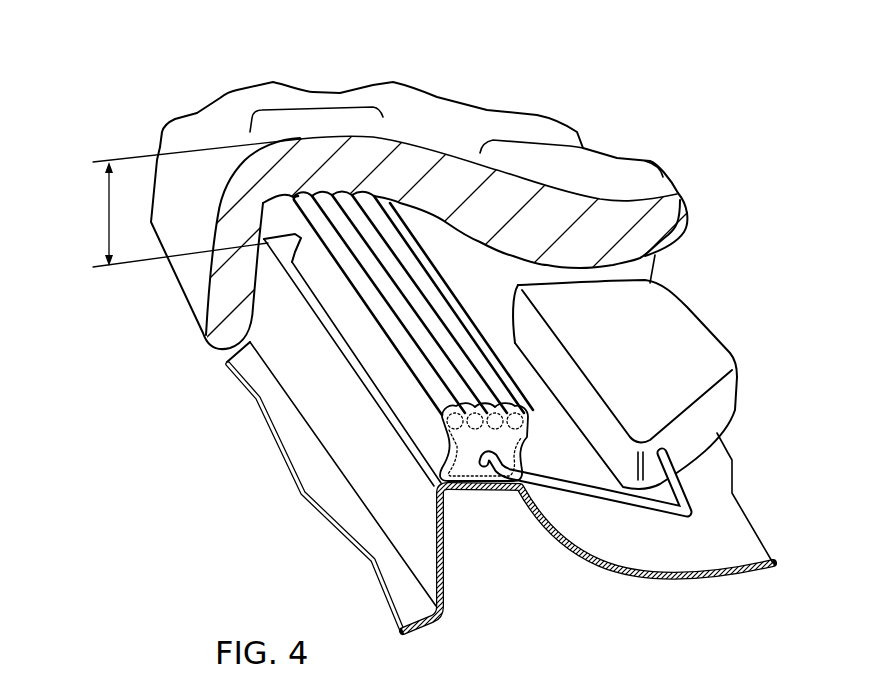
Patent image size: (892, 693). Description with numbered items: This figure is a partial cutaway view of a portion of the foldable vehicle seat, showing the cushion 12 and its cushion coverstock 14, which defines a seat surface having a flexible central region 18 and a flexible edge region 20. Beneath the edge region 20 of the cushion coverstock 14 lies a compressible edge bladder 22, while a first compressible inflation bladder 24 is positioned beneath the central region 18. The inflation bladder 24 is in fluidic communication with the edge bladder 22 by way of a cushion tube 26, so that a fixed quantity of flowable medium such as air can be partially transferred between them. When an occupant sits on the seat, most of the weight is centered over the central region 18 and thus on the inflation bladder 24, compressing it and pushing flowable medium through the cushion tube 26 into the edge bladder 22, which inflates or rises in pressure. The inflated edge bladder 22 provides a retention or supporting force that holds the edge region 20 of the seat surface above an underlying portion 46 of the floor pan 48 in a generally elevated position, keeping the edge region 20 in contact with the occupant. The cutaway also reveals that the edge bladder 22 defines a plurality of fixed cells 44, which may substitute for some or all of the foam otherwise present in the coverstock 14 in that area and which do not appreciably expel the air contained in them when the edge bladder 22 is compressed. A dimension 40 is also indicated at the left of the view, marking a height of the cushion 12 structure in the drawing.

The cushion 12 is at (702, 127).
The cushion coverstock 14 is at (657, 237).
The flexible central region 18 is at (580, 146).
The flexible edge region 20 is at (327, 112).
The compressible edge bladder 22 is at (350, 327).
The first compressible inflation bladder 24 is at (717, 401).
The cushion tube 26 is at (577, 483).
The height dimension 40 is at (108, 203).
The fixed cells 44 is at (520, 407).
The underlying portion 46 is at (348, 460).
The floor pan 48 is at (647, 580).